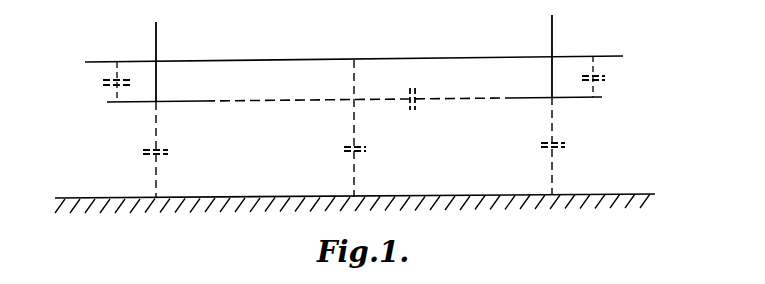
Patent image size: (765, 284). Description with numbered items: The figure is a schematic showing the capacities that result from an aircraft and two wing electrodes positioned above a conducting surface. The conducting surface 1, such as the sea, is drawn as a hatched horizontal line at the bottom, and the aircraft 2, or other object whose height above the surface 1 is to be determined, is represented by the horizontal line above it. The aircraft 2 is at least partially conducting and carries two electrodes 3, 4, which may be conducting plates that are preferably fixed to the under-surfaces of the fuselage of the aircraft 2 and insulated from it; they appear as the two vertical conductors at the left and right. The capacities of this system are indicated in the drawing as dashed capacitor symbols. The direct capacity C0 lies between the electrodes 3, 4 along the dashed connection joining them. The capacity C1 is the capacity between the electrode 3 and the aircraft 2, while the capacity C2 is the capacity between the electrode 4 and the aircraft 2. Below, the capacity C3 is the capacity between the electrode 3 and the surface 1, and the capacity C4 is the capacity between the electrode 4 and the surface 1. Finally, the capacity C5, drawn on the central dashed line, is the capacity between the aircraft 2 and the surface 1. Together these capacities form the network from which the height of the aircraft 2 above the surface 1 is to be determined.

The conducting surface 1 is at (614, 191).
The aircraft 2 is at (385, 58).
The electrode 3 is at (158, 42).
The electrode 4 is at (554, 42).
The direct capacity between electrodes C0 is at (418, 104).
The capacity between electrode 3 and the aircraft C1 is at (103, 92).
The capacity between electrode 4 and the aircraft C2 is at (607, 80).
The capacity between electrode 3 and the surface C3 is at (150, 157).
The capacity between electrode 4 and the surface C4 is at (545, 158).
The capacity between aircraft and the surface C5 is at (348, 158).